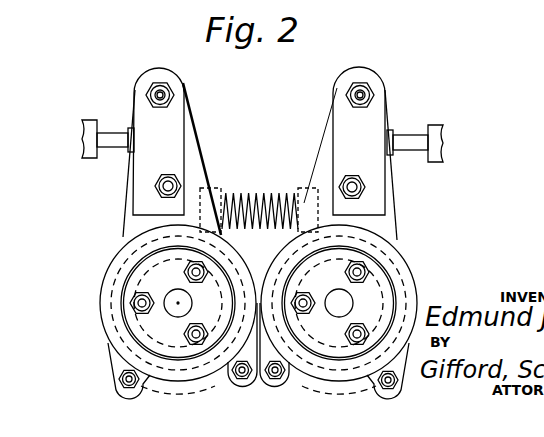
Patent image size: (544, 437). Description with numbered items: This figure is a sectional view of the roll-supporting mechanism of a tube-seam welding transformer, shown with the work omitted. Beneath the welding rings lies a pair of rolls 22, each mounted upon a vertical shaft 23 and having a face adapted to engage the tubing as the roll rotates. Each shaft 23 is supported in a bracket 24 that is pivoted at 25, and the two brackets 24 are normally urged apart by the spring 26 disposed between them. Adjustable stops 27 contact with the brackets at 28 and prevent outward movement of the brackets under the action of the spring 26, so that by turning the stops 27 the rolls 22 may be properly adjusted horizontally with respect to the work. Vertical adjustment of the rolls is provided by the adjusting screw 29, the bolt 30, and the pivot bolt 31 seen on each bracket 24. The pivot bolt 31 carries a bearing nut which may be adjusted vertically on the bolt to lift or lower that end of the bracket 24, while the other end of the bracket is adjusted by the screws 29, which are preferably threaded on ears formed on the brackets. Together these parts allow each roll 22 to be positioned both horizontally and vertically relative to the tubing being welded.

The rolls 22 is at (107, 310).
The vertical shaft 23 is at (172, 293).
The bracket 24 is at (323, 141).
The pivot 25 is at (172, 93).
The spring 26 is at (244, 193).
The adjustable stops 27 is at (108, 133).
The contact point 28 is at (128, 150).
The adjusting screw 29 is at (141, 382).
The bolt 30 is at (156, 188).
The pivot bolt 31 is at (152, 88).